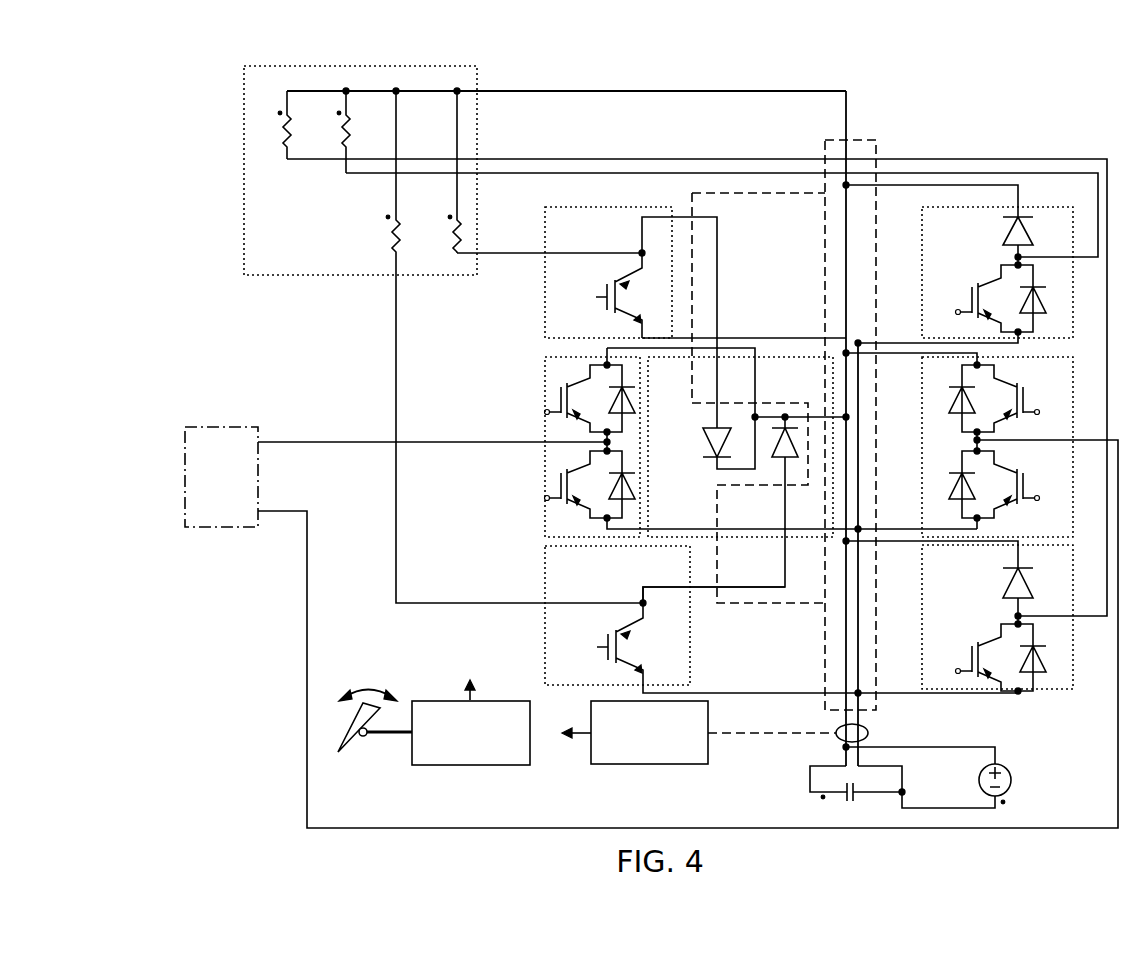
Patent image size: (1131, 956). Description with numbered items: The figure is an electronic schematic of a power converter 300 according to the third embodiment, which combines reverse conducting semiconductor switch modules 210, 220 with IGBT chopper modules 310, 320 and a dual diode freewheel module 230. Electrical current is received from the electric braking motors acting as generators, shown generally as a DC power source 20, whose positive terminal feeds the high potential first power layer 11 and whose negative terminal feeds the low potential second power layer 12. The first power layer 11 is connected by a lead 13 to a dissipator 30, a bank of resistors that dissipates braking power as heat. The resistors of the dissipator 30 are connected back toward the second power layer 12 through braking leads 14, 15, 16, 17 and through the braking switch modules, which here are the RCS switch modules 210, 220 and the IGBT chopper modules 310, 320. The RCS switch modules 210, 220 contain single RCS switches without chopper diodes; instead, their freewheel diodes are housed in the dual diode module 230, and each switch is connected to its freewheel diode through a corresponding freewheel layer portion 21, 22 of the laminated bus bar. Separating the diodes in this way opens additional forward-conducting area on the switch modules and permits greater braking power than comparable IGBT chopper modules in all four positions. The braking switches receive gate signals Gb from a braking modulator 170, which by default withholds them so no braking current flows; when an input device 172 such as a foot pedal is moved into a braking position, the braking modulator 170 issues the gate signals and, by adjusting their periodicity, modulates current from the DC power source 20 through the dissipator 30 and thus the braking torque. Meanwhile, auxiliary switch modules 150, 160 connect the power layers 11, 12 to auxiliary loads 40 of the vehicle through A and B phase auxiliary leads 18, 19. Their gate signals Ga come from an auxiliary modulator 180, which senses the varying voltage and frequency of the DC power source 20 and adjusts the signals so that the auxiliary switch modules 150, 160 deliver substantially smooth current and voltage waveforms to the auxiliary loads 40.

The power converter 300 is at (1020, 78).
The dissipator 30 is at (244, 88).
The lead 13 is at (560, 90).
The braking lead 17 is at (509, 158).
The braking lead 16 is at (527, 176).
The braking lead 14 is at (490, 253).
The braking lead 15 is at (396, 533).
The A phase auxiliary lead 18 is at (285, 445).
The B phase auxiliary lead 19 is at (278, 514).
The first power layer 11 is at (848, 268).
The second power layer 12 is at (856, 338).
The RCS switch module 210 is at (640, 205).
The freewheel layer portion 22 is at (719, 240).
The freewheel layer portion 21 is at (668, 590).
The dual diode module 230 is at (800, 355).
The RCS switch module 220 is at (697, 665).
The auxiliary switch module 150 is at (543, 355).
The auxiliary switch module 160 is at (920, 437).
The IGBT chopper module 310 is at (938, 205).
The IGBT chopper module 320 is at (920, 612).
The auxiliary loads 40 is at (209, 489).
The DC power source 20 is at (1013, 770).
The braking modulator 170 is at (470, 768).
The input device 172 is at (385, 705).
The auxiliary modulator 180 is at (642, 766).